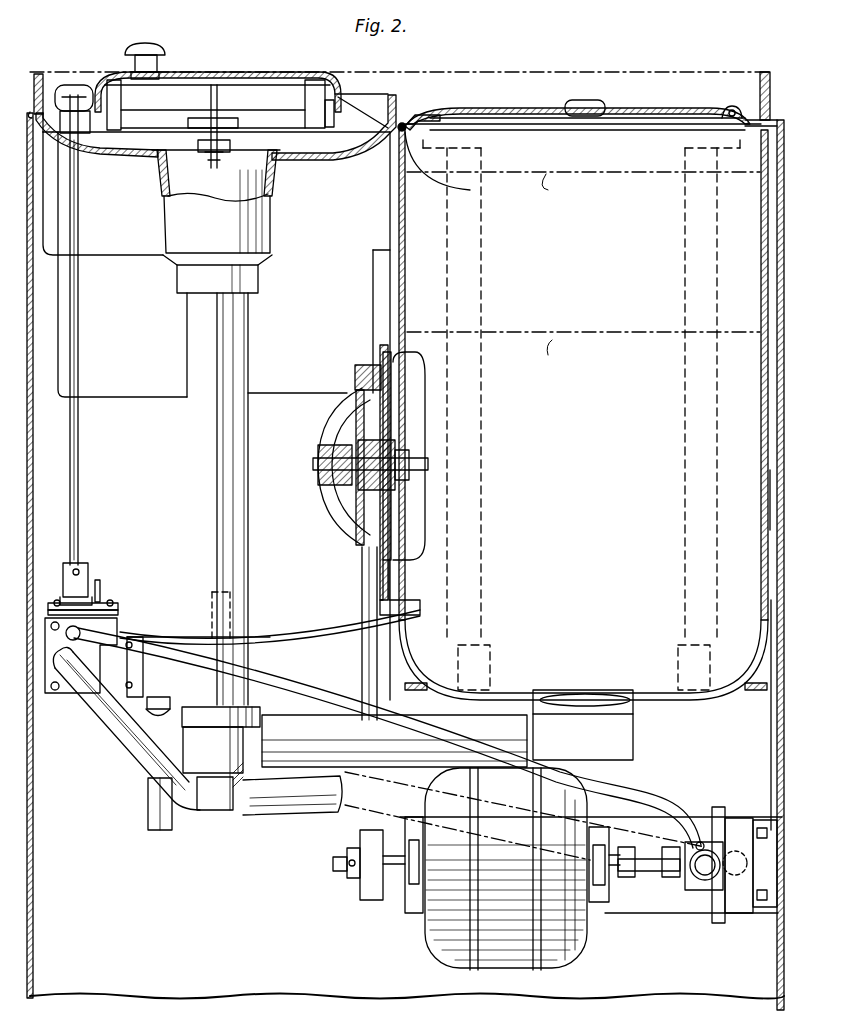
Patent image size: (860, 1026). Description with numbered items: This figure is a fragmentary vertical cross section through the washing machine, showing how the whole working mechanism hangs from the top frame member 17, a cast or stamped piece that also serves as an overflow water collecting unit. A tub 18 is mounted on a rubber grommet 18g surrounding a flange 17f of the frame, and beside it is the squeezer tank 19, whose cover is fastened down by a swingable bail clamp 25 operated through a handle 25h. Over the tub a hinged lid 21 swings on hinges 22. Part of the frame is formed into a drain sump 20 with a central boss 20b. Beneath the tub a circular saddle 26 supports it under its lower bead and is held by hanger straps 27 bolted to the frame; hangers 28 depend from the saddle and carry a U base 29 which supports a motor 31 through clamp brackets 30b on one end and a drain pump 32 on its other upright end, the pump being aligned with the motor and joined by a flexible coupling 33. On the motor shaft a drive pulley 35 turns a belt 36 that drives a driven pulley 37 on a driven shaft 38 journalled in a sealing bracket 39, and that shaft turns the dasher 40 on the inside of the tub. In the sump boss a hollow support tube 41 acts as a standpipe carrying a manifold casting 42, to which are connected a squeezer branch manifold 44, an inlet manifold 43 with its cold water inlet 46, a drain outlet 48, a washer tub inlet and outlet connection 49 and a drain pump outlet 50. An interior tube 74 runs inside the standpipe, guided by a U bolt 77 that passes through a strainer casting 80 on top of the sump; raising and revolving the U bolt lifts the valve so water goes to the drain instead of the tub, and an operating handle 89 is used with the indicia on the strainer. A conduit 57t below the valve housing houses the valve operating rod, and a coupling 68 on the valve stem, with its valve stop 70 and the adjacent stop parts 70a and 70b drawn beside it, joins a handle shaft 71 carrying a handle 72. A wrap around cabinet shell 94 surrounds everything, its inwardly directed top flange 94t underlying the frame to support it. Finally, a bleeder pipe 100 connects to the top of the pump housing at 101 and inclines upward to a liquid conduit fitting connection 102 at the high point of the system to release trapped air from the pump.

The top frame member 17 is at (42, 80).
The flange 17f is at (430, 116).
The tub 18 is at (405, 248).
The rubber grommet 18g is at (470, 190).
The squeezer tank 19 is at (348, 316).
The drain sump 20 is at (325, 160).
The central boss 20b is at (260, 284).
The hinged lid 21 is at (645, 106).
The hinges 22 is at (732, 105).
The bail clamp 25 is at (228, 80).
The handle 25h is at (160, 50).
The circular saddle 26 is at (485, 634).
The hanger straps 27 is at (483, 573).
The hangers 28 is at (777, 746).
The U base 29 is at (657, 818).
The clamp brackets 30b is at (412, 913).
The motor 31 is at (575, 950).
The drain pump 32 is at (745, 915).
The flexible coupling 33 is at (648, 878).
The drive pulley 35 is at (358, 880).
The belt 36 is at (362, 590).
The driven pulley 37 is at (340, 530).
The driven shaft 38 is at (318, 466).
The sealing bracket 39 is at (355, 420).
The dasher 40 is at (427, 418).
The hollow support tube 41 is at (250, 359).
The manifold casting 42 is at (220, 812).
The inlet manifold 43 is at (300, 596).
The squeezer branch manifold 44 is at (120, 612).
The cold water inlet 46 is at (148, 806).
The drain outlet 48 is at (96, 732).
The washer tub inlet and outlet connection 49 is at (305, 740).
The drain pump outlet 50 is at (292, 813).
The conduit 57t is at (232, 596).
The coupling 68 is at (88, 565).
The valve stop 70 is at (102, 604).
The switch pin 70a is at (99, 585).
The switch clamp 70b is at (62, 598).
The handle shaft 71 is at (80, 468).
The handle 72 is at (88, 135).
The interior tube 74 is at (210, 185).
The U bolt 77 is at (198, 138).
The strainer casting 80 is at (272, 166).
The operating handle 89 is at (205, 120).
The wrap around cabinet shell 94 is at (778, 497).
The top flange 94t is at (30, 116).
The bleeder pipe 100 is at (620, 768).
The pump housing connection 101 is at (710, 840).
The liquid conduit fitting connection 102 is at (122, 620).